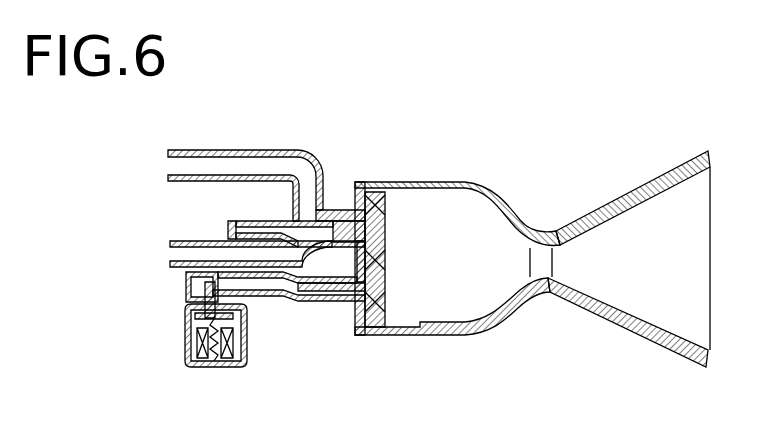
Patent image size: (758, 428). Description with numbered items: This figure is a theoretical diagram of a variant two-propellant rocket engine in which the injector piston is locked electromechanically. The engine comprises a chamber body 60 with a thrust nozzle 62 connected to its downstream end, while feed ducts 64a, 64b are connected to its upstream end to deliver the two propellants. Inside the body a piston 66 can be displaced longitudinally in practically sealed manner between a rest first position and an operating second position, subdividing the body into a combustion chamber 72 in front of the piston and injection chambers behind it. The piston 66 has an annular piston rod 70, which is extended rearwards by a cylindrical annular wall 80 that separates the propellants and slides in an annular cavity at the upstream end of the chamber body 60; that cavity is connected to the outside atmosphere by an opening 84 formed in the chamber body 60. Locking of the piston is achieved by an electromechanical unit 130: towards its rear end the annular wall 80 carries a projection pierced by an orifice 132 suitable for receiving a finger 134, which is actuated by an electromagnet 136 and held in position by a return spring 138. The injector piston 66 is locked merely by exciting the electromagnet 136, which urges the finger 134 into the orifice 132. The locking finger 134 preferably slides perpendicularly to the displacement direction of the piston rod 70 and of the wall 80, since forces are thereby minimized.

The chamber body 60 is at (463, 183).
The thrust nozzle 62 is at (625, 195).
The feed duct 64a is at (247, 143).
The feed duct 64b is at (193, 241).
The piston 66 is at (385, 265).
The annular piston rod 70 is at (342, 212).
The combustion chamber 72 is at (457, 233).
The cylindrical annular wall 80 is at (315, 292).
The opening 84 is at (247, 221).
The electromechanical unit 130 is at (249, 343).
The orifice 132 is at (188, 276).
The finger 134 is at (191, 316).
The electromagnet 136 is at (186, 352).
The return spring 138 is at (212, 361).